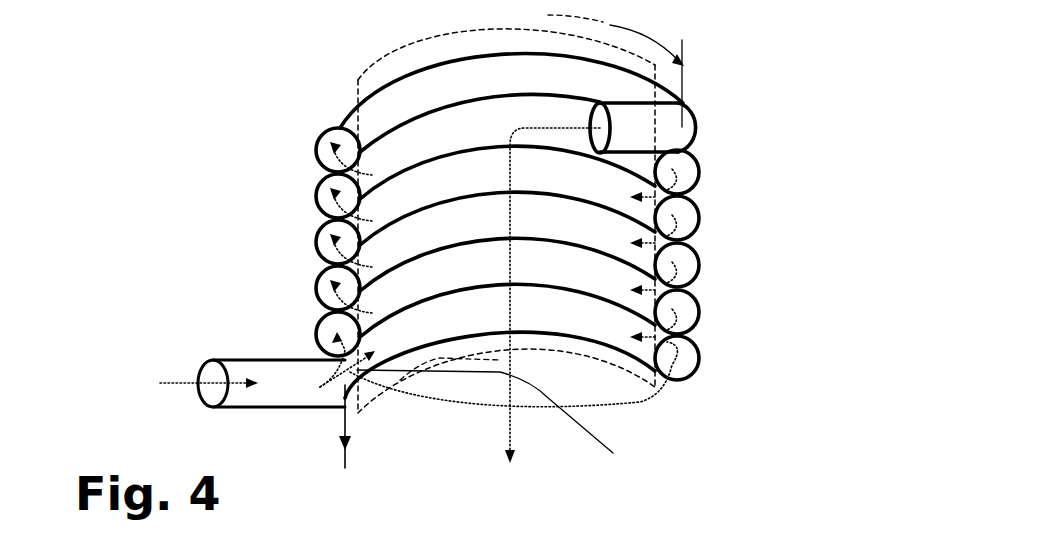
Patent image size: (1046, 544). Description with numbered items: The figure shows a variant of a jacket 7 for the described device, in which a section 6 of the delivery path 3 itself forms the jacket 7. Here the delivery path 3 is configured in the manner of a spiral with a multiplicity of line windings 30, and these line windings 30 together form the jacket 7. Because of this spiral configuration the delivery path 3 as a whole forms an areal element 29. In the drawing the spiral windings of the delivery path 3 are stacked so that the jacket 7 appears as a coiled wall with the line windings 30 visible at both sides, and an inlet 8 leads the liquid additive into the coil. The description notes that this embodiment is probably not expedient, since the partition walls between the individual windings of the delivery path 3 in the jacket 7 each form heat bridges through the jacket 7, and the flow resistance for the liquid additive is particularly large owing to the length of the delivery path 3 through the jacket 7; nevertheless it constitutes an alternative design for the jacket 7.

The delivery path 3 is at (512, 410).
The section 6 is at (648, 40).
The jacket 7 is at (358, 80).
The inlet pipe 8 is at (262, 383).
The areal element 29 is at (716, 218).
The line windings 30 is at (336, 135).